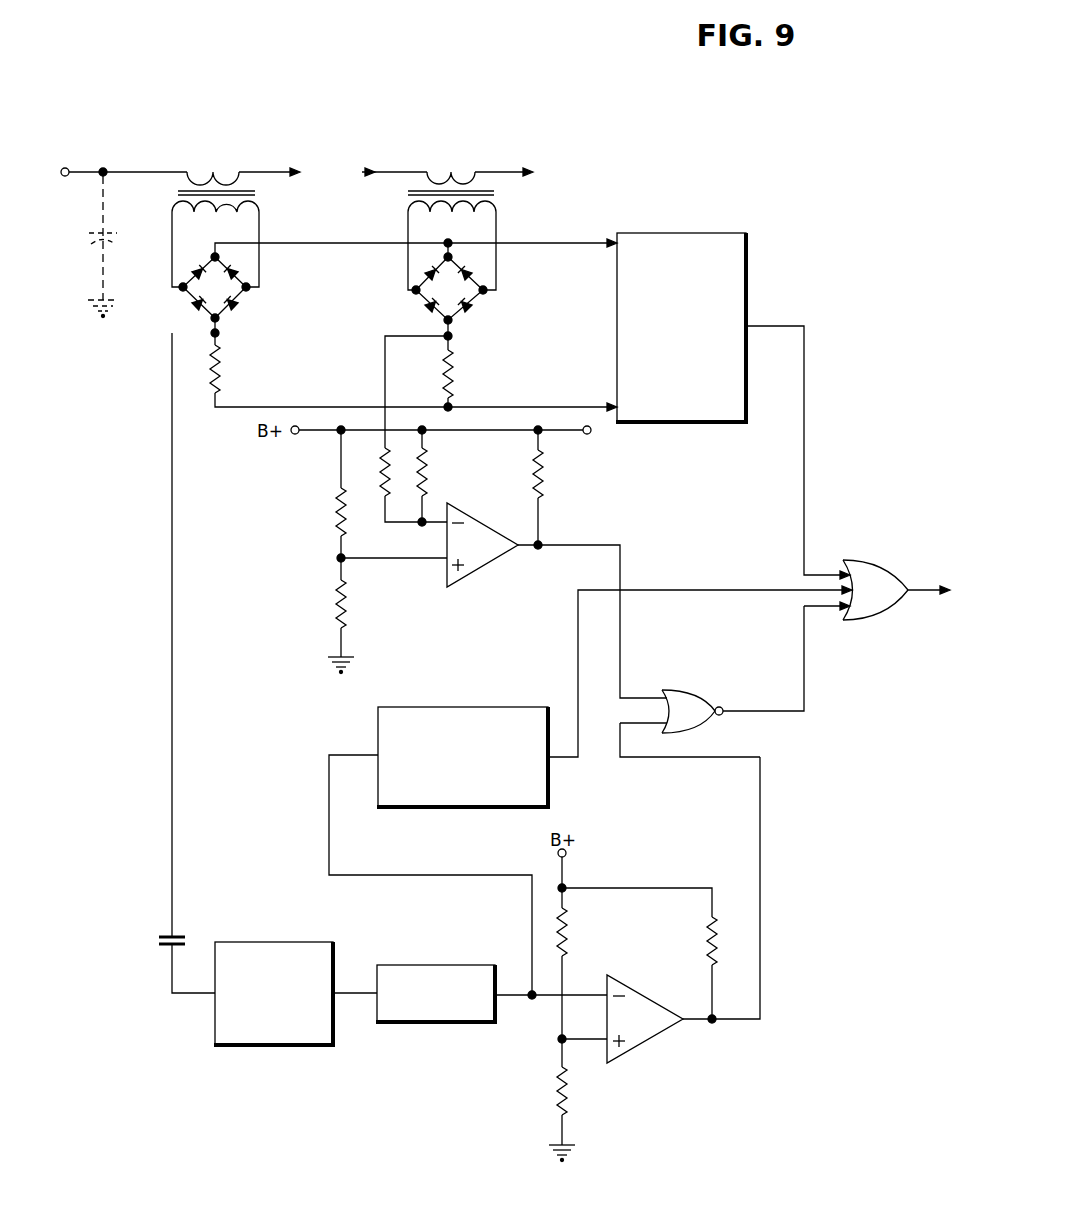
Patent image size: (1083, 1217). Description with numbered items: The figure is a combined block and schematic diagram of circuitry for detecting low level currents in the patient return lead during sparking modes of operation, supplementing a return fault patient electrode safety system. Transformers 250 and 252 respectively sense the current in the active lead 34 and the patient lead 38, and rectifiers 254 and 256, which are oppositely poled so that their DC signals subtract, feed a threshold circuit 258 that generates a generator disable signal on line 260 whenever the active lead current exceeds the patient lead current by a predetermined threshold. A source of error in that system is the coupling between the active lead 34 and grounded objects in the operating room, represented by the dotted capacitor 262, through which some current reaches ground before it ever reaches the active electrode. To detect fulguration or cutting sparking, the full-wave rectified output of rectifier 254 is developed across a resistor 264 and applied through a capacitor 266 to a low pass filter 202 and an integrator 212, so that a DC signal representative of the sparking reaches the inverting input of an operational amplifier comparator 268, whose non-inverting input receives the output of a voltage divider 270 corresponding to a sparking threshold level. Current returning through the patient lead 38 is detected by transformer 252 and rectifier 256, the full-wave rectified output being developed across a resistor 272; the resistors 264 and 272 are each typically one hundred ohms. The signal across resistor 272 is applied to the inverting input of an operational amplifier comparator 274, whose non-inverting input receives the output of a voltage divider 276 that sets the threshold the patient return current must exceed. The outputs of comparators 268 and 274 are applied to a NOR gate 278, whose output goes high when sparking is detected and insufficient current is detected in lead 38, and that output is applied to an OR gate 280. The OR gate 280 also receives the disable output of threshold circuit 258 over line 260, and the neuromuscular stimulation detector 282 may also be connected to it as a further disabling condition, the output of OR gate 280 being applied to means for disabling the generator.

The active lead 34 is at (145, 171).
The patient lead 38 is at (401, 172).
The transformer 250 is at (229, 181).
The transformer 252 is at (464, 179).
The rectifier 254 is at (199, 298).
The rectifier 256 is at (484, 298).
The threshold circuit 258 is at (699, 247).
The line 260 is at (805, 416).
The dotted capacitor 262 is at (100, 246).
The resistor 264 is at (229, 382).
The capacitor 266 is at (170, 935).
The operational amplifier comparator 268 is at (645, 1000).
The voltage divider 270 is at (557, 1040).
The resistor 272 is at (462, 382).
The operational amplifier comparator 274 is at (483, 532).
The voltage divider 276 is at (335, 558).
The NOR gate 278 is at (692, 701).
The OR gate 280 is at (874, 570).
The neuromuscular stimulation detector 282 is at (505, 712).
The low pass filter 202 is at (268, 1033).
The integrator 212 is at (410, 1013).